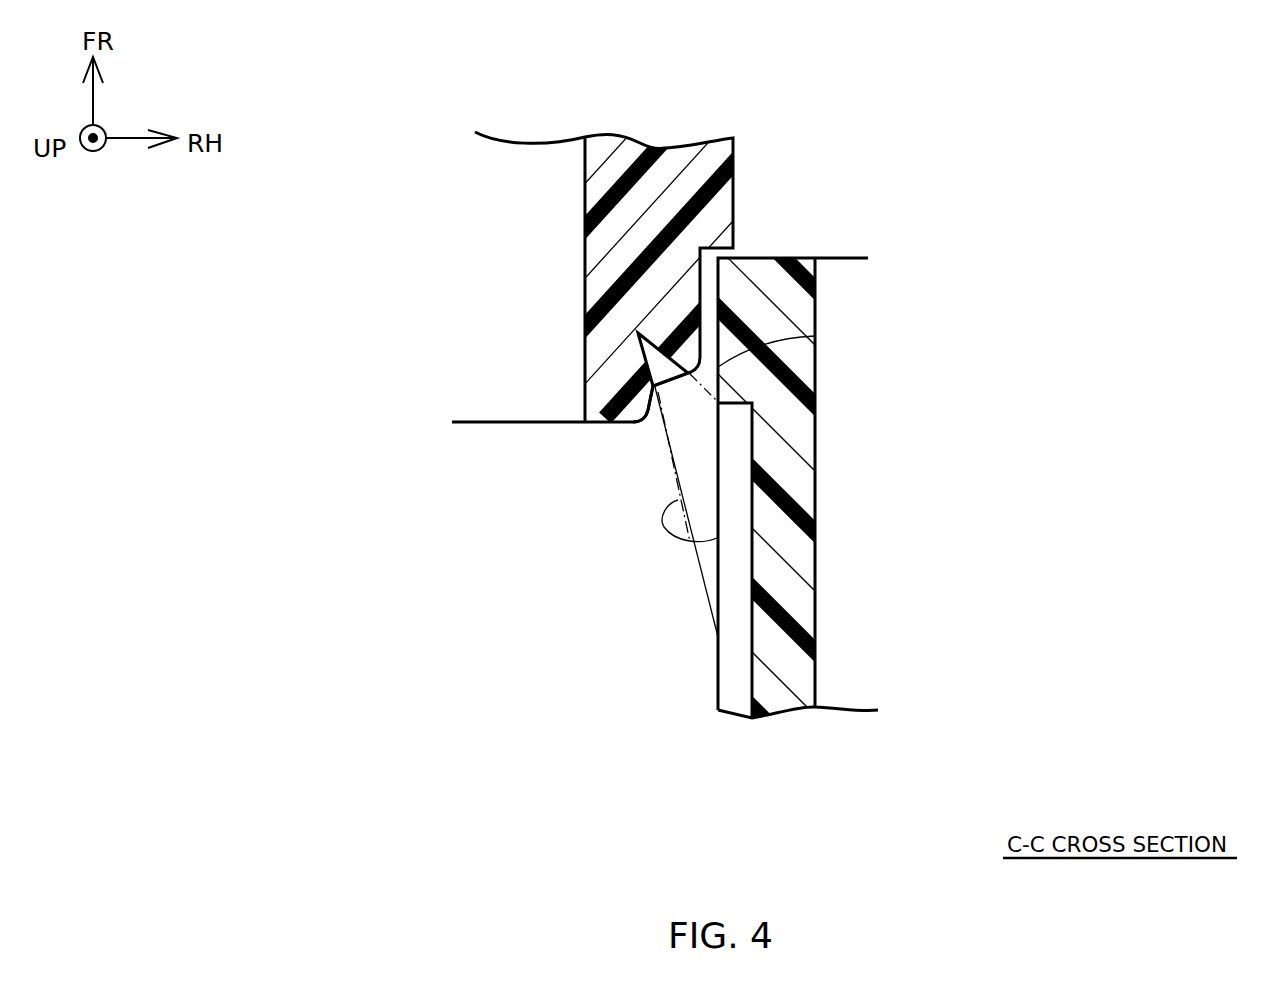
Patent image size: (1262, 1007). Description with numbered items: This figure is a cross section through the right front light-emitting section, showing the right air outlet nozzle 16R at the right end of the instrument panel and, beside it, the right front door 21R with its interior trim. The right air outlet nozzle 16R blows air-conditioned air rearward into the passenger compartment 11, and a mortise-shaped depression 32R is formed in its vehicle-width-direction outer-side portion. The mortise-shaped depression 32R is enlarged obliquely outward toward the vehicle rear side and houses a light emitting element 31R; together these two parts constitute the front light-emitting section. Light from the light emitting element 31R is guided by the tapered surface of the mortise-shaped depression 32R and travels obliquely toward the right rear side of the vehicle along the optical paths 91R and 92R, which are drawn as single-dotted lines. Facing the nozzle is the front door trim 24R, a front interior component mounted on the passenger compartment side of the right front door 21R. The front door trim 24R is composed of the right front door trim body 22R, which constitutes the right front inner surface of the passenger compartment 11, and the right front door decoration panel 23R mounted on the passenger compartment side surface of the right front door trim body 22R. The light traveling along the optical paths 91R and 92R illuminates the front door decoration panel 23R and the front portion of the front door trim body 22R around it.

The passenger compartment 11 is at (457, 681).
The right air outlet nozzle 16R is at (680, 148).
The right front door 21R is at (978, 627).
The right front door trim body 22R is at (807, 258).
The right front door decoration panel 23R is at (735, 718).
The front door trim 24R is at (808, 737).
The light emitting element 31R is at (669, 382).
The mortise-shaped depression 32R is at (654, 416).
The optical path 91R is at (815, 336).
The optical path 92R is at (717, 538).